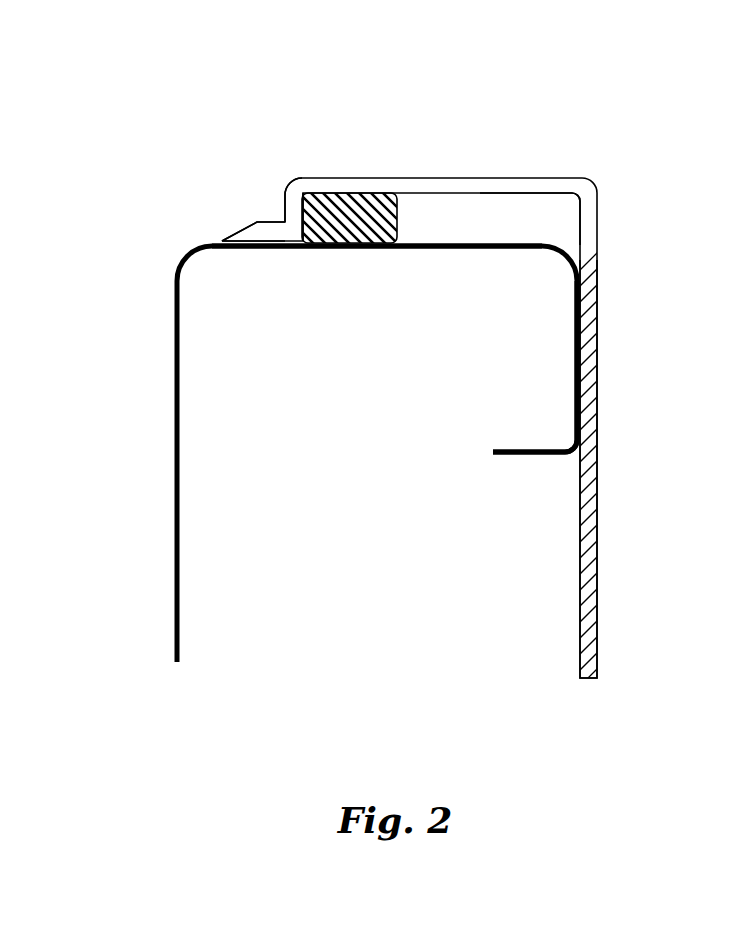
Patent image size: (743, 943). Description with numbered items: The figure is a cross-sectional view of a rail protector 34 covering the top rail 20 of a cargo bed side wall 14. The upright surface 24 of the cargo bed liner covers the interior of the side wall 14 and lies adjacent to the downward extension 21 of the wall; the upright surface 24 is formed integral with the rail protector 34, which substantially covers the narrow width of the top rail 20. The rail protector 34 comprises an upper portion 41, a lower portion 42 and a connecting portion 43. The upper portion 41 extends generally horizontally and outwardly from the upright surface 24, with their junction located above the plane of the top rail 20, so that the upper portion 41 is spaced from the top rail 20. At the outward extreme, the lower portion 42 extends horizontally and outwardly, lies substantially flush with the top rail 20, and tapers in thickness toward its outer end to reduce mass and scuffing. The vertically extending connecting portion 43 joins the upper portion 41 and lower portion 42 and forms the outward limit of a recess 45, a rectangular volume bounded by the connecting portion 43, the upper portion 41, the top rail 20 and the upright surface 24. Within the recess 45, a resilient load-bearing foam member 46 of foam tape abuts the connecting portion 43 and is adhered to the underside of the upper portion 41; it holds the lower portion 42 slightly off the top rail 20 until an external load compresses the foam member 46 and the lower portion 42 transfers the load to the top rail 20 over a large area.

The side wall 14 is at (173, 470).
The top rail 20 is at (440, 247).
The downward extension 21 is at (577, 350).
The upright surface 24 is at (598, 483).
The rail protector 34 is at (457, 124).
The upper portion 41 is at (523, 178).
The lower portion 42 is at (240, 227).
The connecting portion 43 is at (285, 208).
The recess 45 is at (550, 222).
The foam member 46 is at (360, 202).